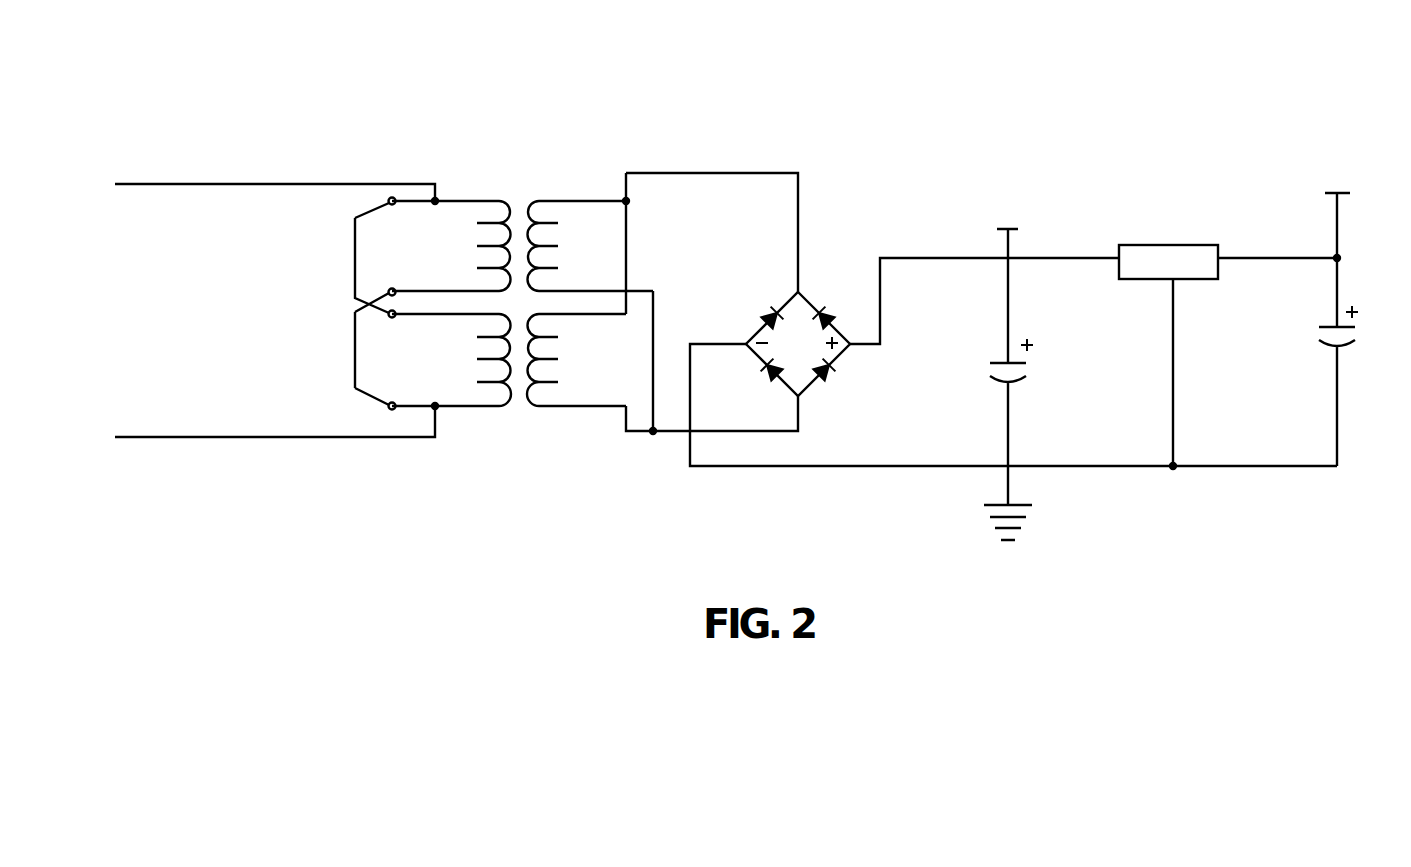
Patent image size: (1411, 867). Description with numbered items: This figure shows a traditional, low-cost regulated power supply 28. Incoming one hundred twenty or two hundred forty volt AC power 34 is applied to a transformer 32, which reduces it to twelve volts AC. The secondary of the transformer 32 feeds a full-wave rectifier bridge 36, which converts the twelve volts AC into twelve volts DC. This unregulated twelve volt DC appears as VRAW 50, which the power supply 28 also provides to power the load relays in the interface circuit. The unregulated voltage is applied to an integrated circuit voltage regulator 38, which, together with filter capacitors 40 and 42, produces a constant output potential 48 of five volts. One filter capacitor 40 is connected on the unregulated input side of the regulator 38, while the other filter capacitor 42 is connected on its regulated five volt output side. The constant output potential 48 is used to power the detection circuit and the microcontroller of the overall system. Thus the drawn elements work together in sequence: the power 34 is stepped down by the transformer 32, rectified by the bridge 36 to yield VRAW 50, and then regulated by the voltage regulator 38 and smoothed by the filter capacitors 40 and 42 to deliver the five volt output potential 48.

The VAC power 34 is at (222, 170).
The transformer 32 is at (503, 162).
The regulated power supply 28 is at (583, 108).
The full-wave rectifier bridge 36 is at (837, 283).
The VRAW 50 is at (1000, 190).
The filter capacitor 40 is at (1017, 388).
The integrated circuit voltage regulator 38 is at (1200, 223).
The filter capacitor 42 is at (1312, 343).
The constant output potential 48 is at (1308, 162).